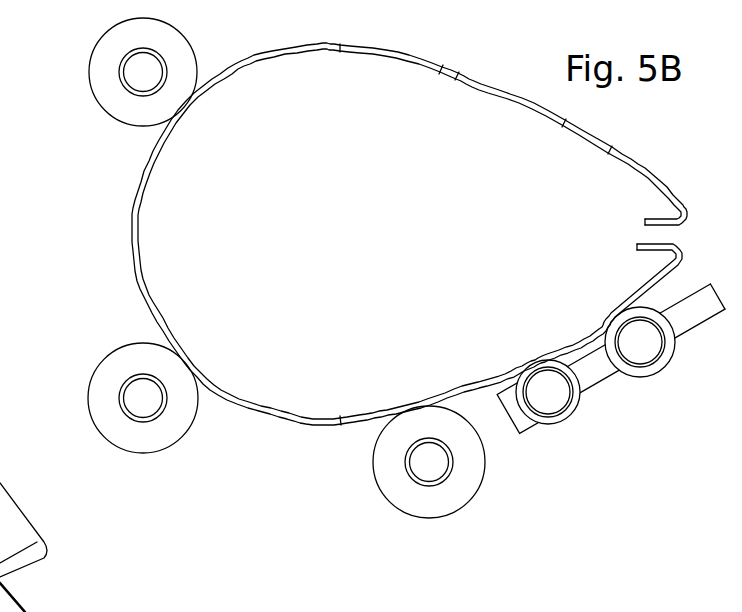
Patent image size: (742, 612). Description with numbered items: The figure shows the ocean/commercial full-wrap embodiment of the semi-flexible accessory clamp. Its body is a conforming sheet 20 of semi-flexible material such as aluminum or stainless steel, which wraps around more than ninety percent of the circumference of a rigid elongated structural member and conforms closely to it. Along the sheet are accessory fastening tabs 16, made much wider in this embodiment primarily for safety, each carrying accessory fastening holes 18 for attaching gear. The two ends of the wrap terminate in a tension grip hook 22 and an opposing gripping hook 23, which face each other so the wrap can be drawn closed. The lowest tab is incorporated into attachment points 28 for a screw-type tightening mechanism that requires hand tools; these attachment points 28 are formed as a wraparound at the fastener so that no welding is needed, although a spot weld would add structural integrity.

The accessory fastening tabs 16 is at (132, 37).
The accessory fastening holes 18 is at (138, 75).
The conforming sheet or sleeve 20 is at (458, 388).
The tension grip hook 22 is at (677, 258).
The gripping hook 23 is at (677, 206).
The attachment points for tightening mechanism 28 is at (640, 346).